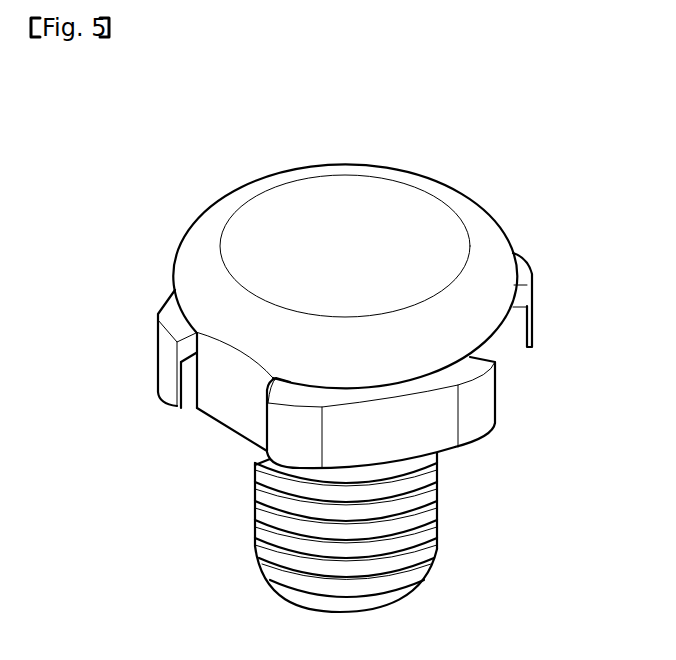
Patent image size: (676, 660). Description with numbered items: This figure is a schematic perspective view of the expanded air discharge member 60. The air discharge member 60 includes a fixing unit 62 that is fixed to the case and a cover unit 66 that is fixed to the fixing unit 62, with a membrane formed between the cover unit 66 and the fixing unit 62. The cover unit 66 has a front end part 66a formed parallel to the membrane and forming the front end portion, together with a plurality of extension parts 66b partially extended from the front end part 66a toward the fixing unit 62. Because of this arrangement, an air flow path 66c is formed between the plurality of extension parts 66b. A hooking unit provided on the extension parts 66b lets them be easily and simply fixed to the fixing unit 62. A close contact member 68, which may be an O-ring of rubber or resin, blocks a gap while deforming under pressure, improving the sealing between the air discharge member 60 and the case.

The air discharge member 60 is at (170, 130).
The cover unit 66 is at (82, 257).
The front end part 66a is at (262, 263).
The extension parts 66b is at (220, 412).
The air flow path 66c is at (186, 375).
The close contact member 68 is at (248, 447).
The fixing unit 62 is at (256, 528).